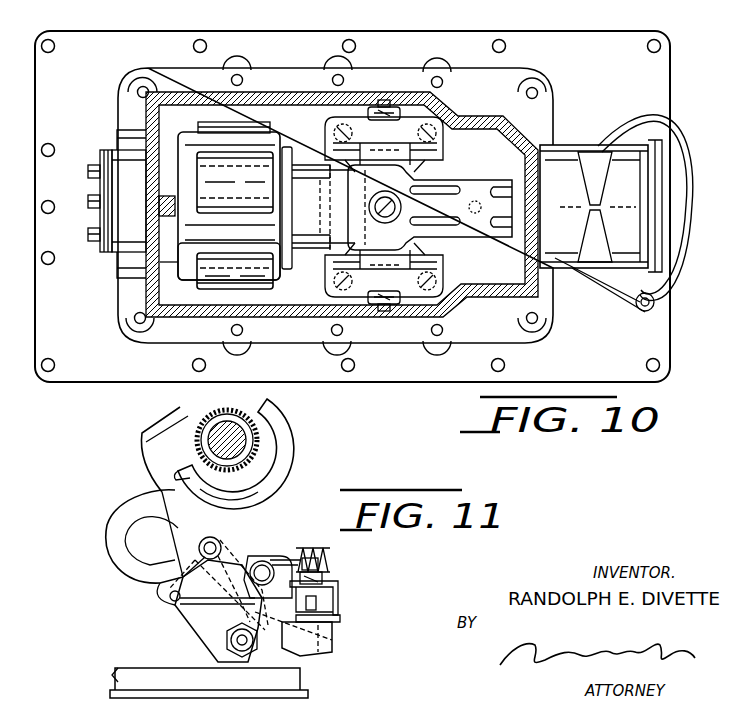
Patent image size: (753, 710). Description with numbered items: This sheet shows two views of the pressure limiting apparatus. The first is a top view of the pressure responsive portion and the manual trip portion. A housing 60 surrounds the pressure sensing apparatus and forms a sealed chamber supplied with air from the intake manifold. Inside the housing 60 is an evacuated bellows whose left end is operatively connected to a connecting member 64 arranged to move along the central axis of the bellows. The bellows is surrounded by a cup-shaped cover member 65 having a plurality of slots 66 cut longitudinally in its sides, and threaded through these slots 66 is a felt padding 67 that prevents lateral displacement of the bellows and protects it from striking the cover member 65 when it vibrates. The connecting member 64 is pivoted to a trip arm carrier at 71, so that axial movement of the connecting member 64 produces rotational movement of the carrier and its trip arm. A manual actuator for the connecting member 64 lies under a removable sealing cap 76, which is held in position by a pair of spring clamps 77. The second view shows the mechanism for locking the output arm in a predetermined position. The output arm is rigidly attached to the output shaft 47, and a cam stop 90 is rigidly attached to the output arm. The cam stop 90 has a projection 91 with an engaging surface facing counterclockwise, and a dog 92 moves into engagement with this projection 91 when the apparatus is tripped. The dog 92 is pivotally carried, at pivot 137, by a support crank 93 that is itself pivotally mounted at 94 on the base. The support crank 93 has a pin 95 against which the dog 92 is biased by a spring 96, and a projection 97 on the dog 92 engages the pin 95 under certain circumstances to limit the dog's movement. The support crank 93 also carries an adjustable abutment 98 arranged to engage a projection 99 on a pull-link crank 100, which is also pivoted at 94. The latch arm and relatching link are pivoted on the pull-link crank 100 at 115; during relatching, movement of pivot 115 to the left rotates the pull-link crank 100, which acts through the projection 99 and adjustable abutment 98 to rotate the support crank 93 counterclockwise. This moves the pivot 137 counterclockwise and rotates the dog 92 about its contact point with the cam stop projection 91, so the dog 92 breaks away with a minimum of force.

In FIG. 11, the output shaft 47 is at (240, 424).
In FIG. 10, the housing 60 is at (540, 143).
In FIG. 10, the connecting member 64 is at (318, 248).
In FIG. 10, the cup-shaped cover member 65 is at (185, 262).
In FIG. 10, the slots 66 is at (199, 140).
In FIG. 10, the felt padding 67 is at (260, 291).
In FIG. 10, the pivot 71 is at (367, 113).
In FIG. 10, the removable sealing cap 76 is at (665, 158).
In FIG. 10, the spring clamps 77 is at (684, 262).
In FIG. 11, the cam stop 90 is at (285, 428).
In FIG. 11, the projection 91 is at (150, 472).
In FIG. 11, the dog 92 is at (192, 522).
In FIG. 11, the support crank 93 is at (185, 612).
In FIG. 11, the pivot 94 is at (228, 645).
In FIG. 11, the pin 95 is at (170, 598).
In FIG. 11, the spring 96 is at (310, 551).
In FIG. 11, the projection 97 is at (244, 540).
In FIG. 11, the adjustable abutment 98 is at (325, 590).
In FIG. 11, the projection 99 is at (330, 617).
In FIG. 11, the pull-link crank 100 is at (305, 651).
In FIG. 11, the pivot 115 is at (284, 560).
In FIG. 11, the pivot 137 is at (232, 546).